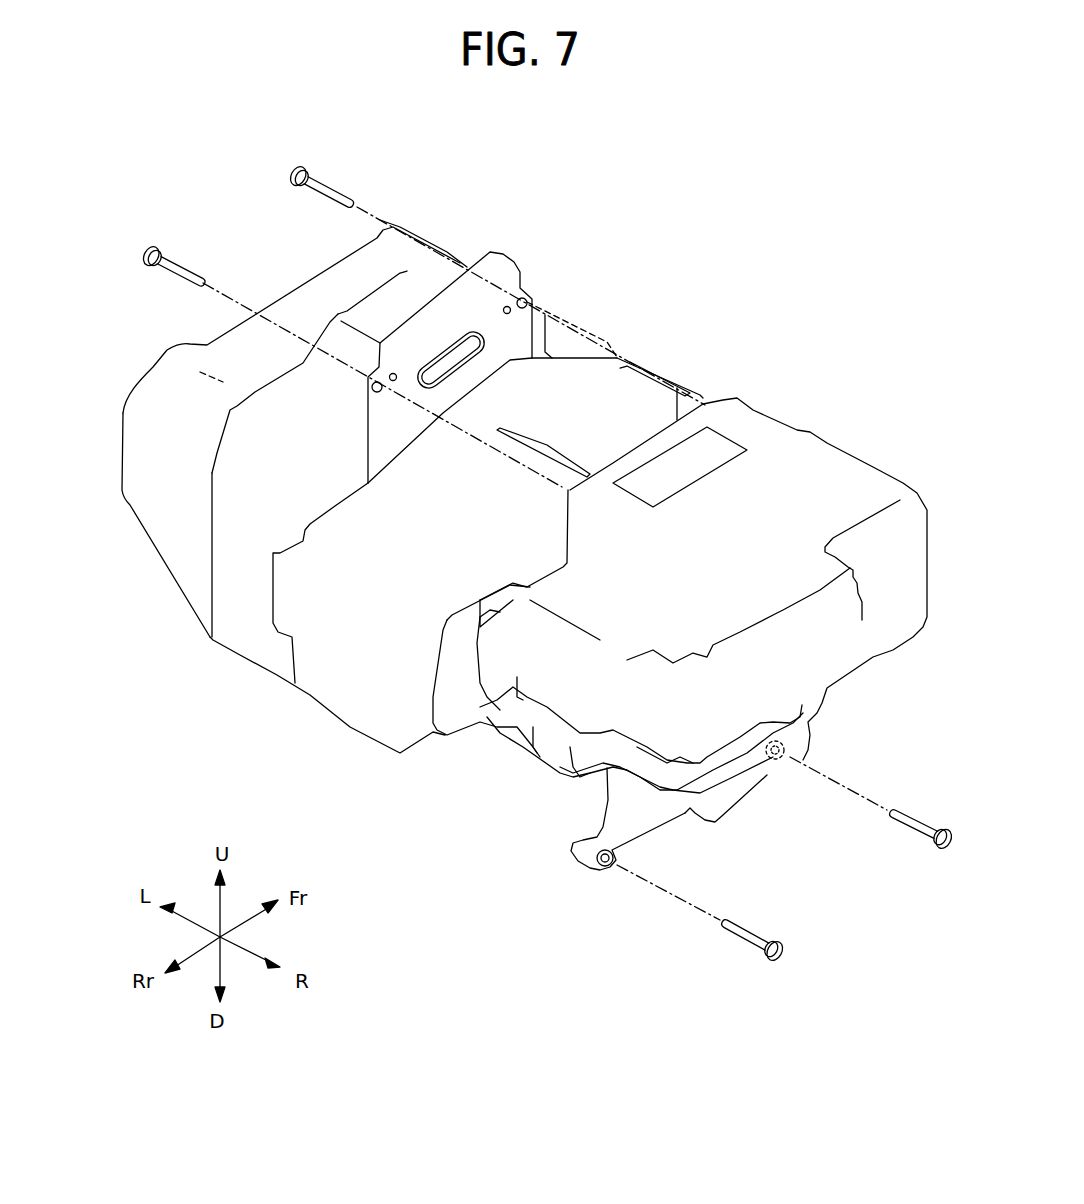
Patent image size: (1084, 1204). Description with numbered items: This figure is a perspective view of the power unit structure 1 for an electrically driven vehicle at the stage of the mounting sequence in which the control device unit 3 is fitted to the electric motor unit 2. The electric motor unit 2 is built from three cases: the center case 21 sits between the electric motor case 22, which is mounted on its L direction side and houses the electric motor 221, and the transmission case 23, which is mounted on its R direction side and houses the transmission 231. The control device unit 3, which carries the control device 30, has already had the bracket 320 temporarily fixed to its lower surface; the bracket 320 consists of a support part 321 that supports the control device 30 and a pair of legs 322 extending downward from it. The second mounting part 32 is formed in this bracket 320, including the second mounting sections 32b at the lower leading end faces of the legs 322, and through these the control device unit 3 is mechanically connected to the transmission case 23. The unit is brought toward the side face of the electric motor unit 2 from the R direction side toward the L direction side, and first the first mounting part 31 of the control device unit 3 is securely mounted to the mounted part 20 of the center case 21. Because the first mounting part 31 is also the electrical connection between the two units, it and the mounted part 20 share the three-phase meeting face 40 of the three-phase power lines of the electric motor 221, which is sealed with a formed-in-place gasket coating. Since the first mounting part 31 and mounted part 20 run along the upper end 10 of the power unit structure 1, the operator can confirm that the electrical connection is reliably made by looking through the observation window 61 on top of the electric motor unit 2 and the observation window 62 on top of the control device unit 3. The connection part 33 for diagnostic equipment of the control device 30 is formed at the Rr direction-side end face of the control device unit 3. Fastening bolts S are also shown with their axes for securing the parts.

The power unit structure 1 is at (745, 200).
The electric motor unit 2 is at (483, 200).
The control device unit 3 is at (932, 437).
The upper end 10 is at (780, 480).
The mounted part 20 is at (450, 347).
The center case 21 is at (240, 503).
The electric motor case 22 is at (207, 397).
The transmission case 23 is at (303, 655).
The control device 30 is at (825, 493).
The first mounting part 31 is at (670, 425).
The connection part 33 is at (588, 767).
The three-phase meeting face 40 is at (463, 337).
The observation window 61 is at (424, 285).
The observation window 62 is at (700, 452).
The electric motor 221 is at (200, 372).
The transmission 231 is at (567, 445).
The bracket 320 is at (807, 873).
The support part 321 is at (763, 773).
The legs 322 is at (645, 813).
The second mounting part 32 is at (570, 894).
The second mounting sections 32b is at (567, 852).
The bolt S is at (290, 170).